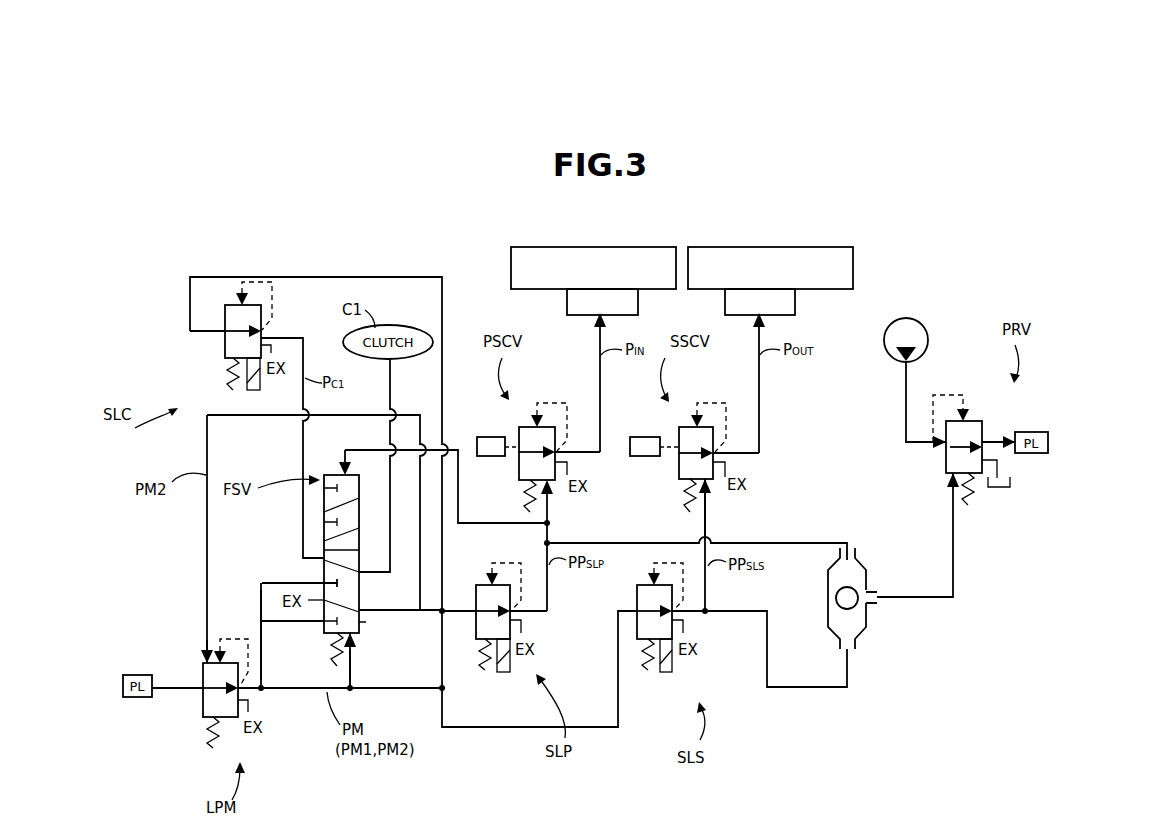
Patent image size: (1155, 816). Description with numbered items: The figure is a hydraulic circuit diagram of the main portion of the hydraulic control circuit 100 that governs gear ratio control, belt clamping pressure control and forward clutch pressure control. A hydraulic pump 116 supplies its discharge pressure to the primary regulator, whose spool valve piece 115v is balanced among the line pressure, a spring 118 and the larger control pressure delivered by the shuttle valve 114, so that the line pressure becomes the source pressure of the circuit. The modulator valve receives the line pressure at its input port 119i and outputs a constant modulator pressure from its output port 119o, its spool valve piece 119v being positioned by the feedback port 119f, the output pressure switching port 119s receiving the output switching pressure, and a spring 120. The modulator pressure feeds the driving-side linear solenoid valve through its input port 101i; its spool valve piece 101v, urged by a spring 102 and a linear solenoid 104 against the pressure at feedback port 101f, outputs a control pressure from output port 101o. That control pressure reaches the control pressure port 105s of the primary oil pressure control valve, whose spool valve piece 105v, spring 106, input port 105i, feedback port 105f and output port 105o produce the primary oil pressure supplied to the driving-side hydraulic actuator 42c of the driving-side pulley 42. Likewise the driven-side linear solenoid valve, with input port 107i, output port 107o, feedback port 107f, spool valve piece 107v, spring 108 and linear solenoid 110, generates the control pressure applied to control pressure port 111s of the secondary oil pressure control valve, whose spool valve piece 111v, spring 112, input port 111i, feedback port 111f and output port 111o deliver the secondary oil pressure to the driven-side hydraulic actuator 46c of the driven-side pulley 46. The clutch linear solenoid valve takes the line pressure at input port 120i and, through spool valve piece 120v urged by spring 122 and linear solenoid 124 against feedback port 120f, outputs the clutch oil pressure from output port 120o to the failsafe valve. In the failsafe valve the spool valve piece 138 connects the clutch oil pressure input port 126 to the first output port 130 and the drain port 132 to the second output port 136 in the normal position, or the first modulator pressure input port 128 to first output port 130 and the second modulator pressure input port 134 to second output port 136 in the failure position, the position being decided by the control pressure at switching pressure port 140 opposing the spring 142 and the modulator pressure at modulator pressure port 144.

The hydraulic control circuit 100 is at (901, 199).
The driving-side pulley 42 is at (610, 246).
The driving-side hydraulic cylinder 42c is at (636, 299).
The driven-side pulley 46 is at (755, 246).
The driven-side hydraulic cylinder 46c is at (793, 299).
The hydraulic pump 116 is at (905, 318).
The spool valve piece 115v is at (948, 458).
The spring 118 is at (965, 505).
The shuttle valve 114 is at (826, 617).
The spool valve piece 120v is at (226, 352).
The feedback port 120f is at (236, 301).
The output port 120o is at (264, 331).
The input port 120i is at (224, 333).
The spring 122 is at (232, 380).
The linear solenoid 124 is at (252, 390).
The switching pressure port 140 is at (343, 471).
The first output port 130 is at (362, 569).
The clutch oil pressure input port 126 is at (322, 562).
The first modulator pressure input port 128 is at (322, 583).
The second output port 136 is at (360, 610).
The spool valve piece 138 is at (362, 622).
The drain port 132 is at (297, 622).
The second modulator pressure input port 134 is at (320, 626).
The spring 142 is at (337, 663).
The modulator pressure port 144 is at (353, 640).
The spool valve piece 119v is at (206, 704).
The feedback port 119f is at (223, 656).
The output pressure switching port 119s is at (205, 657).
The input port 119i is at (203, 687).
The output port 119o is at (241, 690).
The spring 120 is at (210, 740).
The spool valve piece 105v is at (520, 462).
The input port 105i is at (520, 440).
The feedback port 105f is at (537, 418).
The output port 105o is at (558, 452).
The spring 106 is at (530, 497).
The control pressure port 105s is at (551, 486).
The spool valve piece 111v is at (680, 465).
The input port 111i is at (680, 440).
The feedback port 111f is at (697, 418).
The output port 111o is at (716, 453).
The spring 112 is at (690, 510).
The control pressure port 111s is at (712, 487).
The spool valve piece 101v is at (478, 627).
The feedback port 101f is at (489, 580).
The input port 101i is at (478, 608).
The output port 101o is at (512, 616).
The spring 102 is at (483, 670).
The linear solenoid 104 is at (500, 672).
The spool valve piece 107v is at (638, 627).
The feedback port 107f is at (654, 581).
The input port 107i is at (638, 608).
The output port 107o is at (675, 615).
The spring 108 is at (648, 670).
The linear solenoid 110 is at (663, 672).